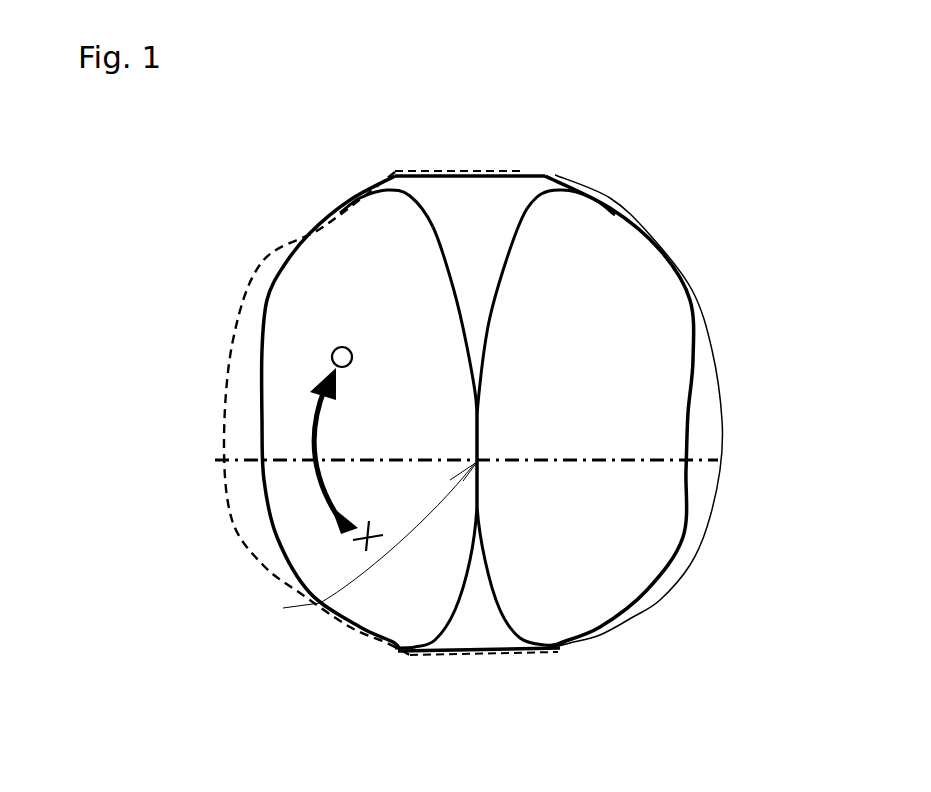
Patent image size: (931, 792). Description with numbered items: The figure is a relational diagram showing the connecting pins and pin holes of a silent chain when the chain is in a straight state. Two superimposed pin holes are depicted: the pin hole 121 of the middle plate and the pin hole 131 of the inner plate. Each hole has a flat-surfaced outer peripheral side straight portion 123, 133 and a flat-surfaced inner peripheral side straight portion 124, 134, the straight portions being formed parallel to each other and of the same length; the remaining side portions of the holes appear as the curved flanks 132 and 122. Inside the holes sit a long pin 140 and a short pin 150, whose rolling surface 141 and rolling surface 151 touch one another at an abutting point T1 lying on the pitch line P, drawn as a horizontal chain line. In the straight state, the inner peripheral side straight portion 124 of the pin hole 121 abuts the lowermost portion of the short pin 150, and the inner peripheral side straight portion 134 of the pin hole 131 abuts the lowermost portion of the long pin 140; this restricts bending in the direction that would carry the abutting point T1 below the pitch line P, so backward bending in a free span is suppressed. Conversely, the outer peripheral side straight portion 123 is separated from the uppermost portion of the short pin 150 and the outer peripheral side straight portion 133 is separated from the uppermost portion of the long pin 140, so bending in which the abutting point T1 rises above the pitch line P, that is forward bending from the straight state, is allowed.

The pin hole 121 is at (233, 355).
The second side portion 122 is at (670, 413).
The outer peripheral side straight portion 123 is at (515, 180).
The inner peripheral side straight portion 124 is at (433, 642).
The pin hole 131 is at (707, 363).
The first side portion 132 is at (283, 413).
The outer peripheral side straight portion 133 is at (418, 180).
The inner peripheral side straight portion 134 is at (503, 640).
The long pin 140 is at (627, 273).
The rolling surface 141 is at (506, 258).
The short pin 150 is at (343, 267).
The rolling surface 151 is at (454, 277).
The pitch line P is at (632, 461).
The abutting point T1 is at (367, 541).